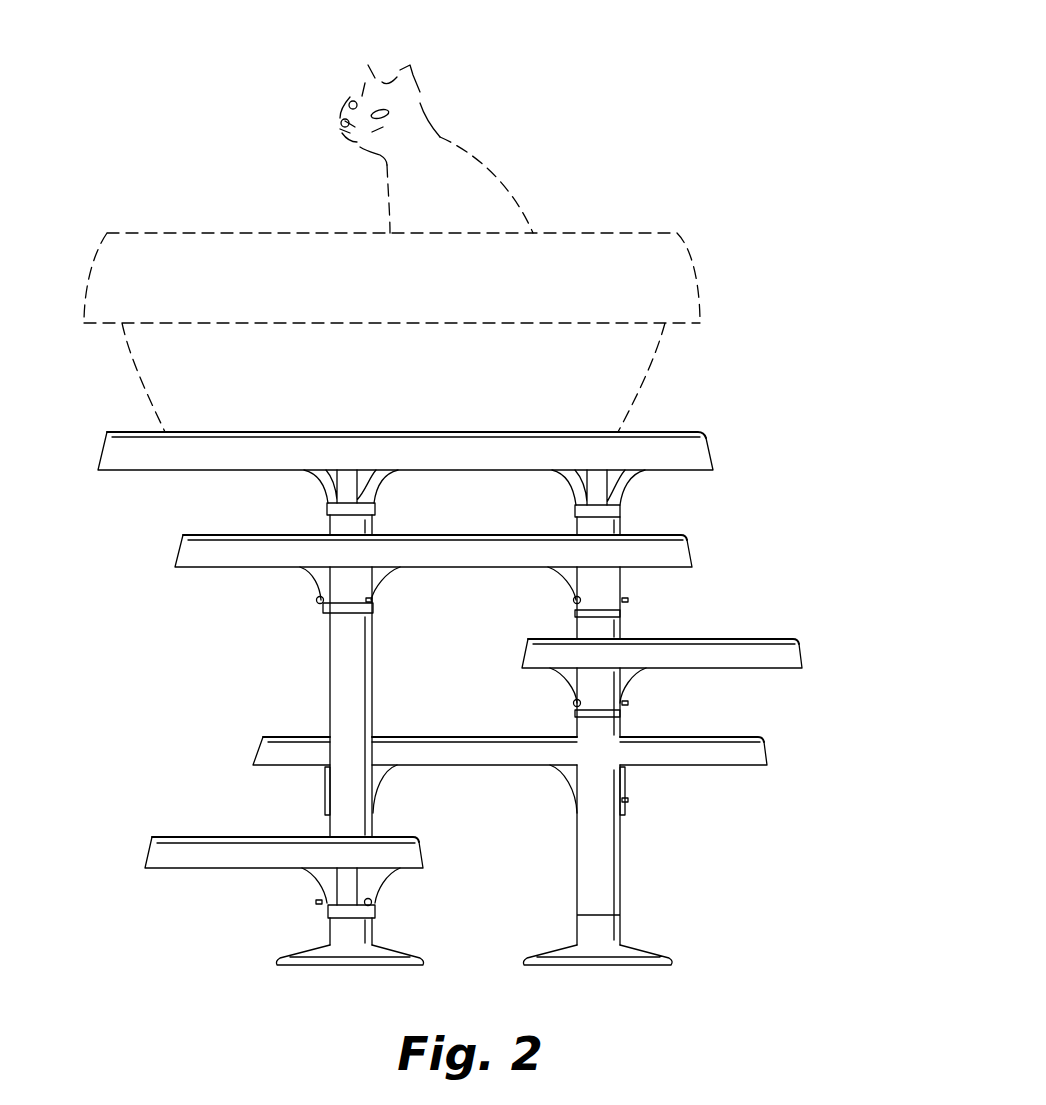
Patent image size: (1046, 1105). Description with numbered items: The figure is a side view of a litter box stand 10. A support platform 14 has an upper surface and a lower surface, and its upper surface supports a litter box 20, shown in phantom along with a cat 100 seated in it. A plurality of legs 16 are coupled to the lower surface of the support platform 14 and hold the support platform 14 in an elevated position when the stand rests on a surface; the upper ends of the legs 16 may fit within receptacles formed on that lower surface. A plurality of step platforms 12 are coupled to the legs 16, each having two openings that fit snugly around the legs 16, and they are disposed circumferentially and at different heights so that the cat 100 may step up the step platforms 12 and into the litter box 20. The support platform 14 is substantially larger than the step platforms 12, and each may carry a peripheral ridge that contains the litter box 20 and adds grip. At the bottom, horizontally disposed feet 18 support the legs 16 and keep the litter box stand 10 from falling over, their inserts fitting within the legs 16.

The litter box stand 10 is at (741, 518).
The step platforms 12 is at (187, 543).
The support platform 14 is at (663, 445).
The legs 16 is at (342, 717).
The feet 18 is at (325, 962).
The litter box 20 is at (635, 250).
The cat 100 is at (443, 147).